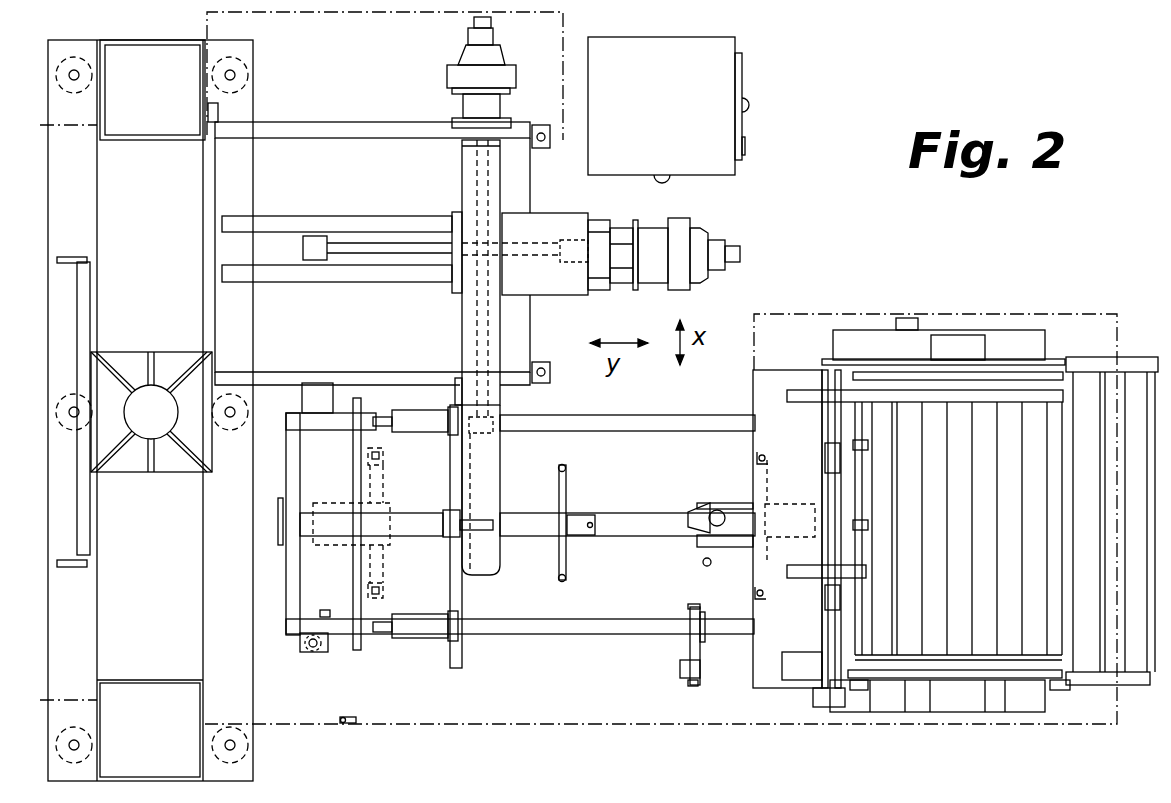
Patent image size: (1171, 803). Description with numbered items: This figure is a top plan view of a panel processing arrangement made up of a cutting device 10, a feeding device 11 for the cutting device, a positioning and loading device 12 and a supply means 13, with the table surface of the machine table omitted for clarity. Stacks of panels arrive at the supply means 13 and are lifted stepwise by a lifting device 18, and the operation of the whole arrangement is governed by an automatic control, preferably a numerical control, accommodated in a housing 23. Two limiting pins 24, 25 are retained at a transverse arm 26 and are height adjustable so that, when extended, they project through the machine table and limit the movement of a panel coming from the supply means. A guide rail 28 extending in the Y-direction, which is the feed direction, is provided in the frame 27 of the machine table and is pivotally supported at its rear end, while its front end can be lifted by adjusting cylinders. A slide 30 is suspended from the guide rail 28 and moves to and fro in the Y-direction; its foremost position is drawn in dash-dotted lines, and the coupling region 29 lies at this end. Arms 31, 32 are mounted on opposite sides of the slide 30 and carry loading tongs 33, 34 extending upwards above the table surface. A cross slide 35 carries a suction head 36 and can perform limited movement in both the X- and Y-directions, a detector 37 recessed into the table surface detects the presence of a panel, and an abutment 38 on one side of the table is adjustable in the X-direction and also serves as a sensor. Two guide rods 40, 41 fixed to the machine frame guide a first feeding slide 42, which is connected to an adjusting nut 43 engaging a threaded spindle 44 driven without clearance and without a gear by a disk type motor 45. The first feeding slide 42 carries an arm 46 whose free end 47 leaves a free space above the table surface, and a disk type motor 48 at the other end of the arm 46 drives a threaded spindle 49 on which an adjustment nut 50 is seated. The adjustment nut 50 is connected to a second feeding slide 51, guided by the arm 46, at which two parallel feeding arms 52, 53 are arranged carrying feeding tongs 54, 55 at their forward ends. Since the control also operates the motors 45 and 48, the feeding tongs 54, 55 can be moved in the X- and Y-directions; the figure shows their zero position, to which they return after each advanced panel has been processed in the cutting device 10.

The cutting device 10 is at (172, 38).
The feeding device 11 is at (501, 476).
The positioning and loading device 12 is at (658, 479).
The supply means 13 is at (787, 370).
The lifting device 18 is at (980, 395).
The housing 23 is at (727, 123).
The limiting pin 24 is at (565, 470).
The limiting pin 25 is at (566, 582).
The transverse arm 26 is at (567, 495).
The frame 27 is at (652, 416).
The guide rail 28 is at (636, 532).
The coupling 29 is at (820, 510).
The slide 30 is at (732, 504).
The arm 31 is at (767, 478).
The arm 32 is at (765, 590).
The loading tongs 33 is at (766, 455).
The loading tongs 34 is at (765, 603).
The cross slide 35 is at (695, 523).
The suction head 36 is at (710, 515).
The detector 37 is at (710, 566).
The abutment 38 is at (680, 658).
The guide rod 40 is at (277, 228).
The guide rod 41 is at (273, 277).
The first feeding slide 42 is at (543, 222).
The adjusting nut 43 is at (592, 240).
The threaded spindle 44 is at (357, 252).
The disk type motor 45 is at (682, 222).
The arm 46 is at (520, 327).
The free end 47 is at (493, 578).
The disk type motor 48 is at (455, 72).
The threaded spindle 49 is at (478, 158).
The adjustment nut 50 is at (480, 432).
The second feeding slide 51 is at (455, 470).
The feeding arm 52 is at (423, 410).
The feeding arm 53 is at (421, 620).
The feeding tongs 54 is at (377, 415).
The feeding tongs 55 is at (378, 633).